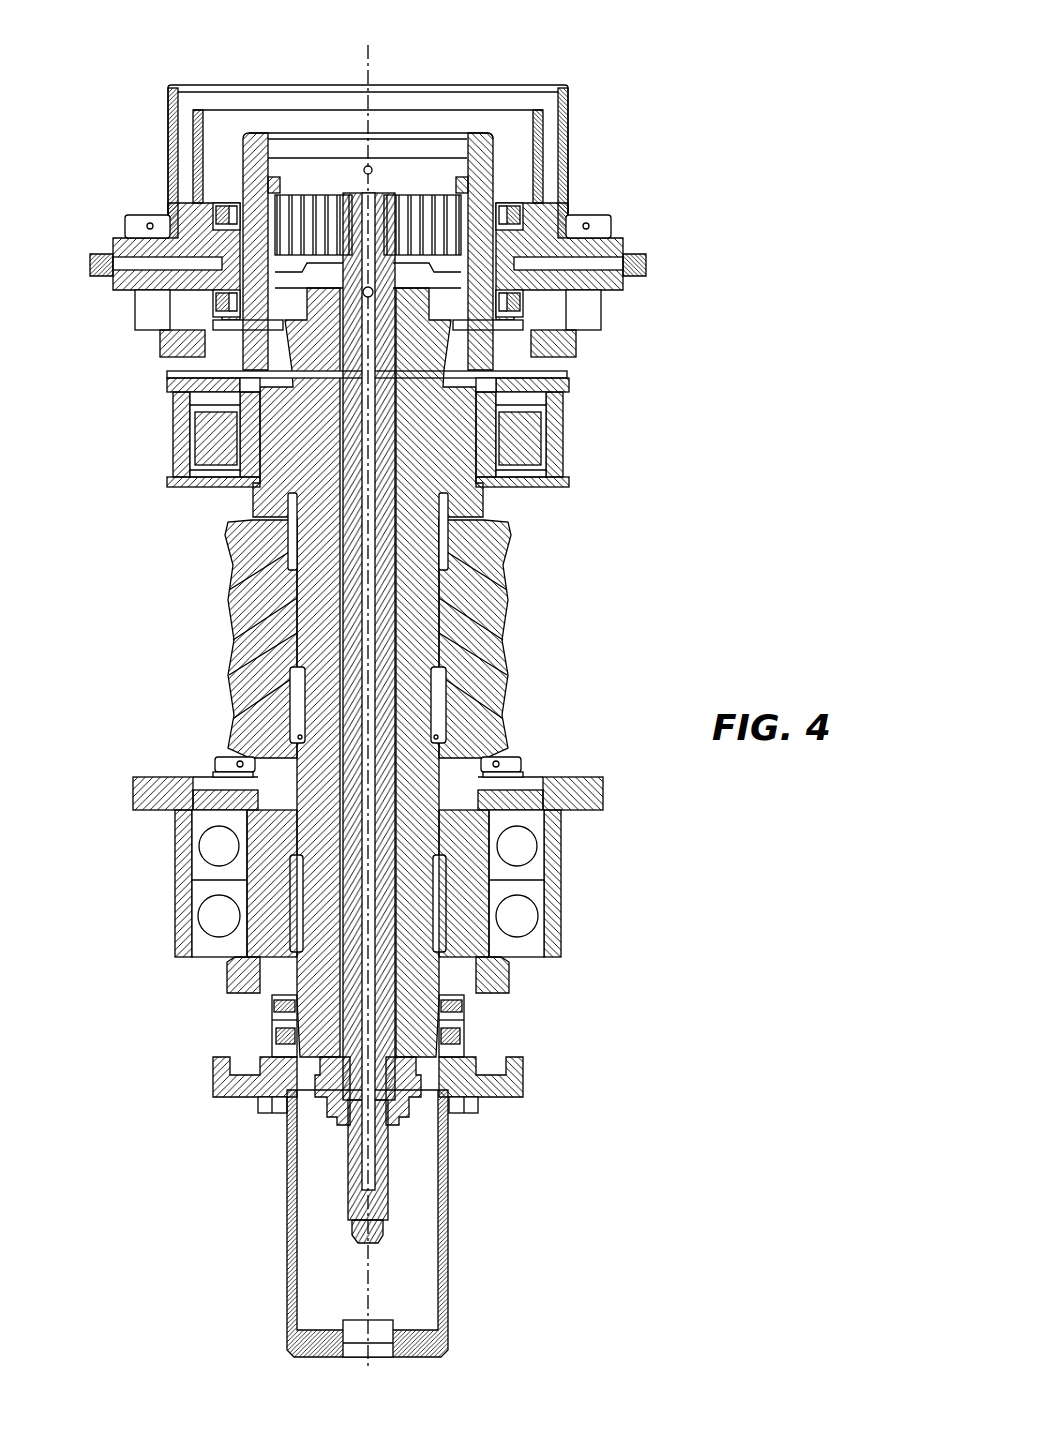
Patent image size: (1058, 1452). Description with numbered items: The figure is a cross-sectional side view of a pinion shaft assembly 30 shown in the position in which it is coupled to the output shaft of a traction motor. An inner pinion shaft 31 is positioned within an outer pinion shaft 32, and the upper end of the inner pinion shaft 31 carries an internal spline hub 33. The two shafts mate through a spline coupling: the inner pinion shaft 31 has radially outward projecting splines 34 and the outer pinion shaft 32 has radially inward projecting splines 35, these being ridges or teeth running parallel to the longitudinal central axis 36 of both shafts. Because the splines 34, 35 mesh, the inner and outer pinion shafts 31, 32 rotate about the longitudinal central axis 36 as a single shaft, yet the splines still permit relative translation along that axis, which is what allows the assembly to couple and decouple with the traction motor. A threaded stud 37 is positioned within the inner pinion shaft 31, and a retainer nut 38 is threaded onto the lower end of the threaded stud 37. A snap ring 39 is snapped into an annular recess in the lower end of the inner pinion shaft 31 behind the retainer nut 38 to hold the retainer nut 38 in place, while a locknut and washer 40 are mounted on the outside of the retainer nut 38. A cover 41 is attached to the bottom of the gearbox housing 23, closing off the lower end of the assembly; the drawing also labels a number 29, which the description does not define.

The gearbox housing 23 is at (213, 1066).
The seal 29 is at (216, 213).
The pinion shaft assembly 30 is at (646, 37).
The inner pinion shaft 31 is at (413, 790).
The outer pinion shaft 32 is at (500, 610).
The internal spline hub 33 is at (408, 192).
The radially outward projecting splines 34 is at (450, 607).
The radially inward projecting splines 35 is at (436, 626).
The longitudinal central axis 36 is at (366, 70).
The threaded stud 37 is at (390, 1168).
The retainer nut 38 is at (450, 1040).
The snap ring 39 is at (333, 1077).
The locknut and washer 40 is at (415, 1088).
The cover 41 is at (450, 1258).